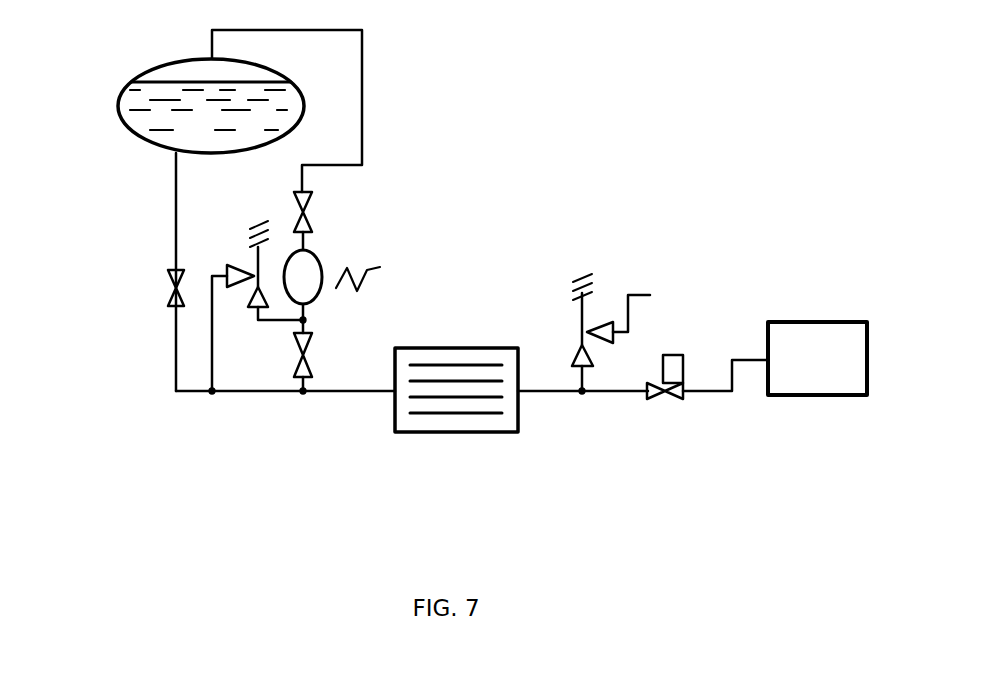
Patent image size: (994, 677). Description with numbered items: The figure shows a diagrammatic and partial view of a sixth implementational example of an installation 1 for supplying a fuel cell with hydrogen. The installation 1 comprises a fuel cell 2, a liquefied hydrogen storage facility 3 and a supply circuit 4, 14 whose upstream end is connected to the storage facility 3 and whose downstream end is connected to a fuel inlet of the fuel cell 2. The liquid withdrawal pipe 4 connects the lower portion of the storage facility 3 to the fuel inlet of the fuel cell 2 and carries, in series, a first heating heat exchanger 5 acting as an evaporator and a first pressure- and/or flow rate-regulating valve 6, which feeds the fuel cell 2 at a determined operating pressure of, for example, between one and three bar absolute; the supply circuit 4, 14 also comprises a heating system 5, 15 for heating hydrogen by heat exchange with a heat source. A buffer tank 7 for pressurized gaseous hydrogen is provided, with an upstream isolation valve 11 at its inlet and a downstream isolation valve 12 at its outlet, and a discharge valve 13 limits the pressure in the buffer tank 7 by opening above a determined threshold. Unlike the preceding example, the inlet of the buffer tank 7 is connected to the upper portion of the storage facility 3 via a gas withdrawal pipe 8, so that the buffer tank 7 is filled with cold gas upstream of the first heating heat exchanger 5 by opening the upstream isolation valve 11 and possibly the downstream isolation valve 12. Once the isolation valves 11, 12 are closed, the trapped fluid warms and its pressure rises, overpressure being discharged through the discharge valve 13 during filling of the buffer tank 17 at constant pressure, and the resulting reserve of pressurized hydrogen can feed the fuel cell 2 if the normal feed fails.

The installation 1 is at (848, 482).
The fuel cell 2 is at (830, 360).
The liquefied hydrogen storage facility 3 is at (137, 133).
The liquid withdrawal pipe 4 is at (338, 393).
The first heating heat exchanger 5 is at (452, 423).
The first pressure- and/or flow rate-regulating valve 6 is at (670, 407).
The buffer tank 7 is at (310, 277).
The gas withdrawal pipe 8 is at (365, 113).
The upstream isolation valve 11 is at (320, 202).
The downstream isolation valve 12 is at (290, 358).
The discharge valve 13 is at (242, 308).
The supply circuit 14 is at (313, 381).
The heating system 15 is at (597, 314).
The buffer tank 17 is at (369, 260).